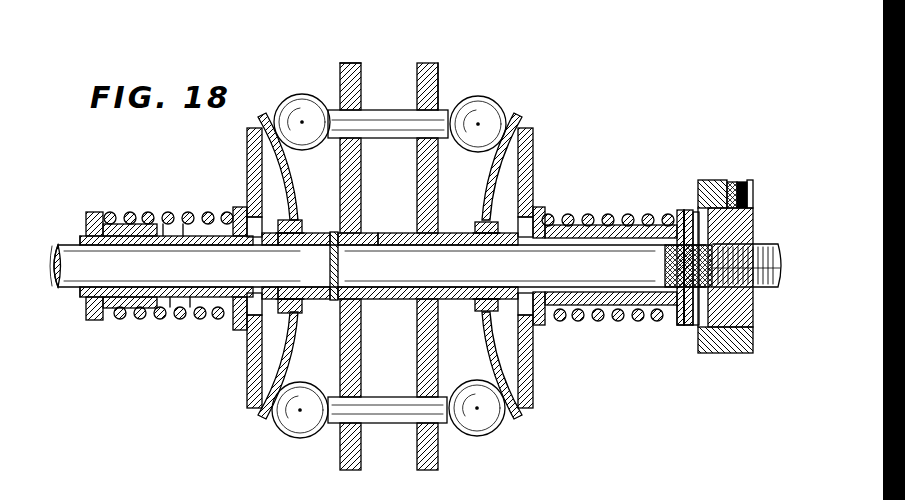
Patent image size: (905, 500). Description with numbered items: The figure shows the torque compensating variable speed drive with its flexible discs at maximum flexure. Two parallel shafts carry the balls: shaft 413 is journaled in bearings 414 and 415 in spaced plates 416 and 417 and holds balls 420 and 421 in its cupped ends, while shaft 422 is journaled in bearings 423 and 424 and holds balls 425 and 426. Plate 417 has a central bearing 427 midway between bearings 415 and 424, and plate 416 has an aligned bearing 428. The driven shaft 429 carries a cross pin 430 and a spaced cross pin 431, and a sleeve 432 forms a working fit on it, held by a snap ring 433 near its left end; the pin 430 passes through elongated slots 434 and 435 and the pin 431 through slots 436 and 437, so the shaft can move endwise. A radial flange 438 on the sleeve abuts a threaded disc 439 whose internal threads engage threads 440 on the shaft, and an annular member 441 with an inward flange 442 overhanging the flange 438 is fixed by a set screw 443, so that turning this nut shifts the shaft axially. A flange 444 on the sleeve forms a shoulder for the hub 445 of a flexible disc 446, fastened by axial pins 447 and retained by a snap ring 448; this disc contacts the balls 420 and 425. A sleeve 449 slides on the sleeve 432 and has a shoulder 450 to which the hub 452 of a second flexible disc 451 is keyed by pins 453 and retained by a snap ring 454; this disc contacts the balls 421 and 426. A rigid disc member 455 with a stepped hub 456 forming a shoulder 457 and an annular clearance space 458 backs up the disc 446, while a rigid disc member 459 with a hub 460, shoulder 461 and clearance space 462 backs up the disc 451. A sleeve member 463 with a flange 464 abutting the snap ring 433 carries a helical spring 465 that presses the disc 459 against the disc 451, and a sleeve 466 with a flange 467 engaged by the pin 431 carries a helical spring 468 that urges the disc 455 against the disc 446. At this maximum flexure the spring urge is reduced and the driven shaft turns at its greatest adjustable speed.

The shaft 413 is at (398, 114).
The bearing 414 is at (342, 100).
The bearing 415 is at (444, 100).
The plate 416 is at (352, 63).
The plate 417 is at (440, 66).
The ball 420 is at (490, 105).
The ball 421 is at (292, 101).
The shaft 422 is at (338, 426).
The bearing 423 is at (342, 395).
The bearing 424 is at (438, 395).
The ball 425 is at (492, 428).
The ball 426 is at (294, 432).
The bearing 427 is at (438, 212).
The bearing 428 is at (362, 214).
The shaft 429 is at (63, 244).
The cross pin 430 is at (339, 263).
The cross pin 431 is at (680, 322).
The sleeve 432 is at (440, 308).
The snap ring 433 is at (78, 296).
The elongated slot 434 is at (324, 248).
The elongated slot 435 is at (345, 286).
The elongated slot 436 is at (678, 226).
The elongated slot 437 is at (624, 321).
The radial flange 438 is at (722, 350).
The threaded disc 439 is at (753, 236).
The threads 440 is at (770, 290).
The annular internally threaded member 441 is at (731, 182).
The inward radial flange 442 is at (702, 196).
The set screw 443 is at (743, 182).
The flange portion 444 is at (575, 290).
The hub 445 is at (482, 312).
The flexible disc 446 is at (494, 162).
The axial pin 447 is at (490, 287).
The snap ring 448 is at (480, 223).
The sleeve 449 is at (372, 232).
The shoulder 450 is at (272, 230).
The flexible disc 451 is at (286, 165).
The hub 452 is at (294, 221).
The pin 453 is at (270, 245).
The snap ring 454 is at (294, 314).
The disc member 455 is at (533, 144).
The hub 456 is at (570, 321).
The shoulder 457 is at (545, 328).
The annular clearance space 458 is at (540, 208).
The disc member 459 is at (247, 139).
The hub 460 is at (188, 319).
The shoulder 461 is at (234, 330).
The annular clearance space 462 is at (236, 287).
The sleeve member 463 is at (143, 318).
The flange 464 is at (100, 320).
The helical spring 465 is at (186, 212).
The sleeve 466 is at (612, 223).
The flange 467 is at (694, 328).
The helical spring 468 is at (578, 212).